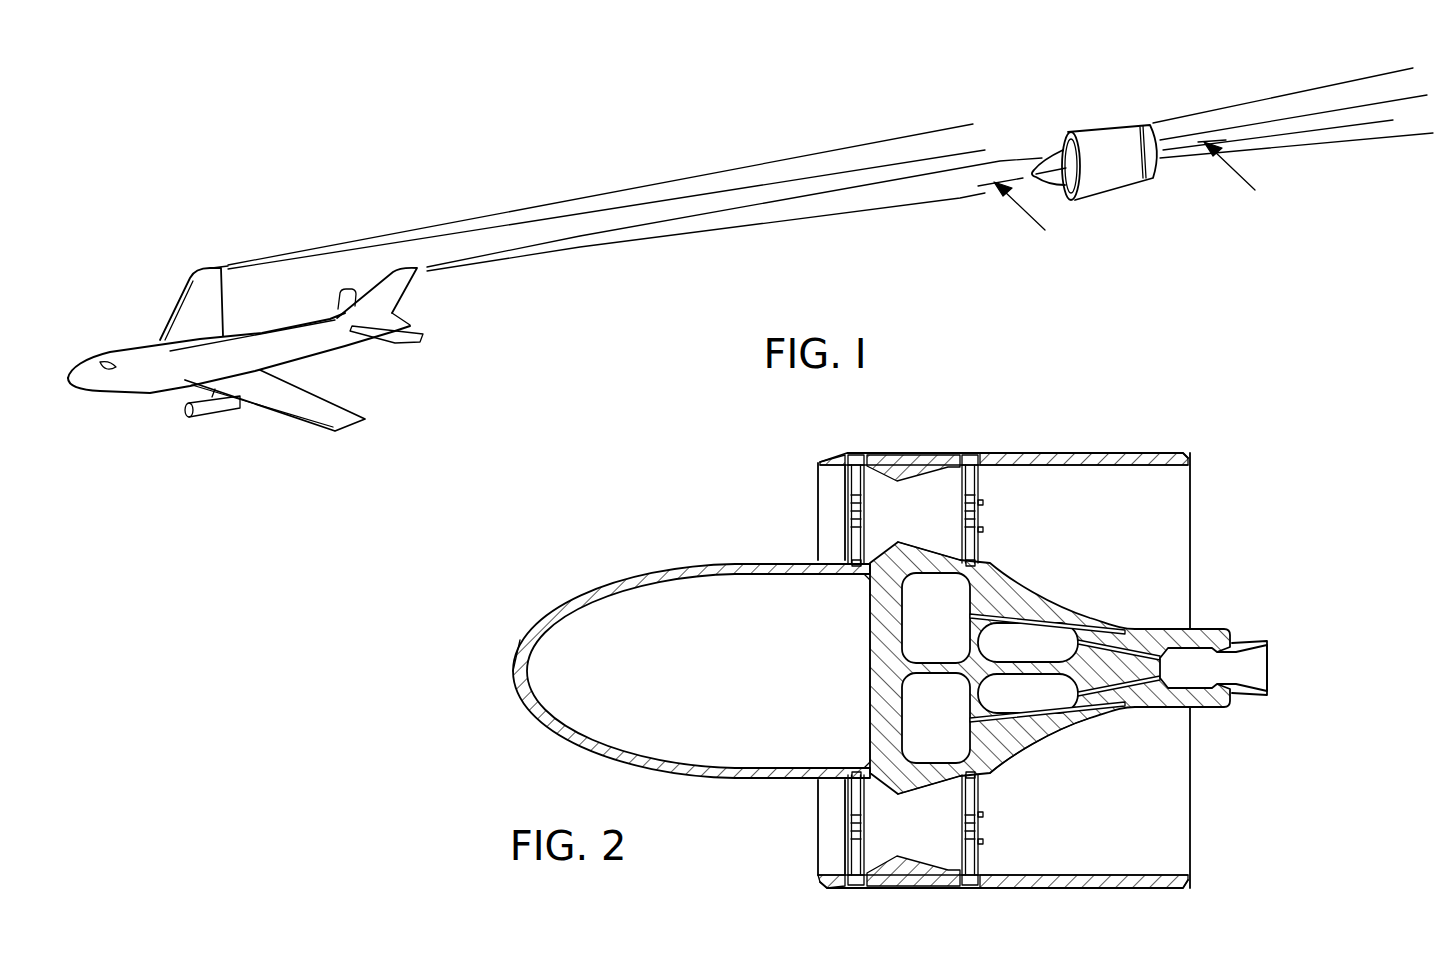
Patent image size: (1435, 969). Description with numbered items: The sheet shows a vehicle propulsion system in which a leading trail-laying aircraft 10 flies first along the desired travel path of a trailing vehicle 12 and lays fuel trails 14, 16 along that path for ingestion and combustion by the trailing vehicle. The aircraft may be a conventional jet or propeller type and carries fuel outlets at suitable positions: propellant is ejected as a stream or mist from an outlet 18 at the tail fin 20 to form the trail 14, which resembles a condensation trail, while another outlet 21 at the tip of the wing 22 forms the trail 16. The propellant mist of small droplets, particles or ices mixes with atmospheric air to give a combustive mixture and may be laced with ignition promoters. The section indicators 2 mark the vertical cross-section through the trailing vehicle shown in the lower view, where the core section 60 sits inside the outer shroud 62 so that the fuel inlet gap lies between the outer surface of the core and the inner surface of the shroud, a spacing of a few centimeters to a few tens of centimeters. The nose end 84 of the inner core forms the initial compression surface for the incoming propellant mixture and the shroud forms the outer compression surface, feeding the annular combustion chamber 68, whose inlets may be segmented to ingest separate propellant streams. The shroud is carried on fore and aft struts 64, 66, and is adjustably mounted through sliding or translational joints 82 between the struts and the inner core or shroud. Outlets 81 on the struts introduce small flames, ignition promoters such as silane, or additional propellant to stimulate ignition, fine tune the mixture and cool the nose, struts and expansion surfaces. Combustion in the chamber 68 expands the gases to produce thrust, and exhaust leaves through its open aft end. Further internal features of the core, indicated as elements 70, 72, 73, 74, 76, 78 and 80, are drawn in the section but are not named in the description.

In FIG. 1, the leading trail-laying aircraft 10 is at (138, 403).
In FIG. 1, the trailing vehicle 12 is at (1145, 206).
In FIG. 1, the fuel trail 14 is at (757, 227).
In FIG. 1, the fuel trail 16 is at (647, 184).
In FIG. 1, the fuel outlet 18 is at (418, 268).
In FIG. 1, the tail fin 20 is at (388, 299).
In FIG. 1, the fuel outlet 21 is at (216, 264).
In FIG. 1, the wing 22 is at (190, 293).
In FIG. 1, the section line 2- 2 is at (1205, 163).
In FIG. 1, the core section 60 is at (1057, 165).
In FIG. 2, the core section 60 is at (633, 575).
In FIG. 1, the outer shroud 62 is at (1110, 129).
In FIG. 2, the outer shroud 62 is at (1063, 453).
In FIG. 2, the first propellant conduit 64 is at (856, 498).
In FIG. 2, the second propellant conduit 66 is at (964, 494).
In FIG. 2, the combustion chamber 68 is at (897, 533).
In FIG. 2, the injector body 70 is at (882, 790).
In FIG. 2, the injector body flange 72 is at (926, 784).
In FIG. 2, the combustion chamber wall 73 is at (1033, 740).
In FIG. 2, the exhaust nozzle 74 is at (1256, 640).
In FIG. 2, the propellant manifold cavities 76 is at (953, 607).
In FIG. 2, the injector passages 78 is at (1134, 652).
In FIG. 2, the nose cavity 80 is at (680, 660).
In FIG. 2, the outlets 81 is at (986, 530).
In FIG. 2, the sliding or translational joints 82 is at (855, 455).
In FIG. 2, the nose end 84 is at (514, 671).